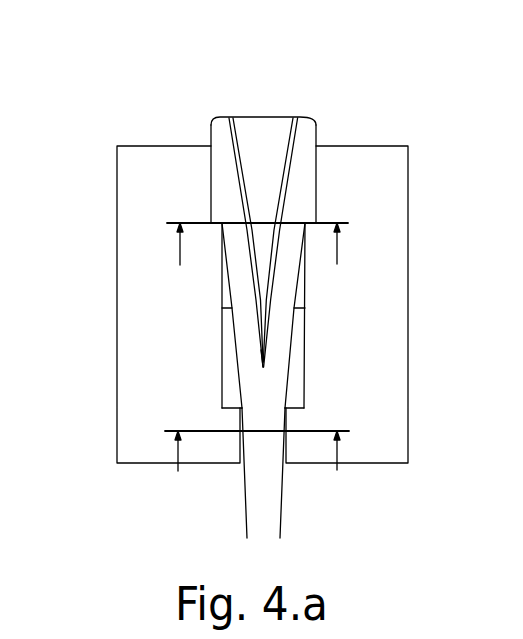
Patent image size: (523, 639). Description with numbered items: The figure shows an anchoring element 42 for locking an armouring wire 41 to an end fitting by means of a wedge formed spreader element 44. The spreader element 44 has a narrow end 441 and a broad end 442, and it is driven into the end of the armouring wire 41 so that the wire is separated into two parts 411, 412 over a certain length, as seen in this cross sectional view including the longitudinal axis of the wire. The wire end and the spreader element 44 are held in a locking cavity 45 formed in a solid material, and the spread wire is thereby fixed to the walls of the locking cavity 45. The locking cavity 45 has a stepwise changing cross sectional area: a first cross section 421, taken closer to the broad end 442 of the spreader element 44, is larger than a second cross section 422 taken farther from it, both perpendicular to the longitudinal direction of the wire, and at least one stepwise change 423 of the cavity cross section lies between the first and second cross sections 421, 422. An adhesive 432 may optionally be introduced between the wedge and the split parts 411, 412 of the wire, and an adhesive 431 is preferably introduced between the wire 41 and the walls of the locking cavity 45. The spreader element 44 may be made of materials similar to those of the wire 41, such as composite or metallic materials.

The armouring wire 41 is at (265, 512).
The anchoring element 42 is at (142, 158).
The first cross section 421 is at (167, 223).
The second cross section 422 is at (172, 432).
The stepwise change 423 is at (221, 304).
The adhesive 431 is at (312, 188).
The adhesive 432 is at (298, 148).
The spreader element 44 is at (201, 250).
The wire part 411 is at (219, 125).
The wire part 412 is at (306, 131).
The narrow end 441 is at (250, 378).
The broad end 442 is at (266, 108).
The locking cavity 45 is at (208, 275).